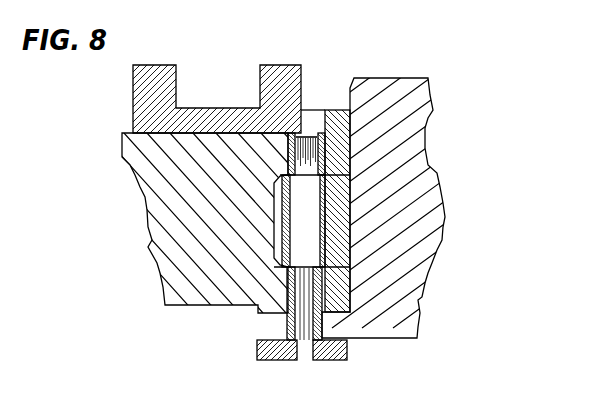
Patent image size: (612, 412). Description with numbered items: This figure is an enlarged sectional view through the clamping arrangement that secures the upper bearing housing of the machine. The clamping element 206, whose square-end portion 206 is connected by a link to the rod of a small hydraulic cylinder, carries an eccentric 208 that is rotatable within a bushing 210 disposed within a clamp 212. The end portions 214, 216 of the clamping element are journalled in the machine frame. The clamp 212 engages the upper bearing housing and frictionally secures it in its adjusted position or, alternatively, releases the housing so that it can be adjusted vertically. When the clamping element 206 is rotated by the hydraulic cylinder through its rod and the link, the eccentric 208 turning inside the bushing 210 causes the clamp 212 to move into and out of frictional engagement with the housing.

The square-end portion of clamping element 206 is at (312, 361).
The eccentric 208 is at (313, 239).
The bushing 210 is at (323, 206).
The clamp 212 is at (350, 183).
The end portion of clamping element 214 is at (310, 135).
The end portion of clamping element 216 is at (305, 289).